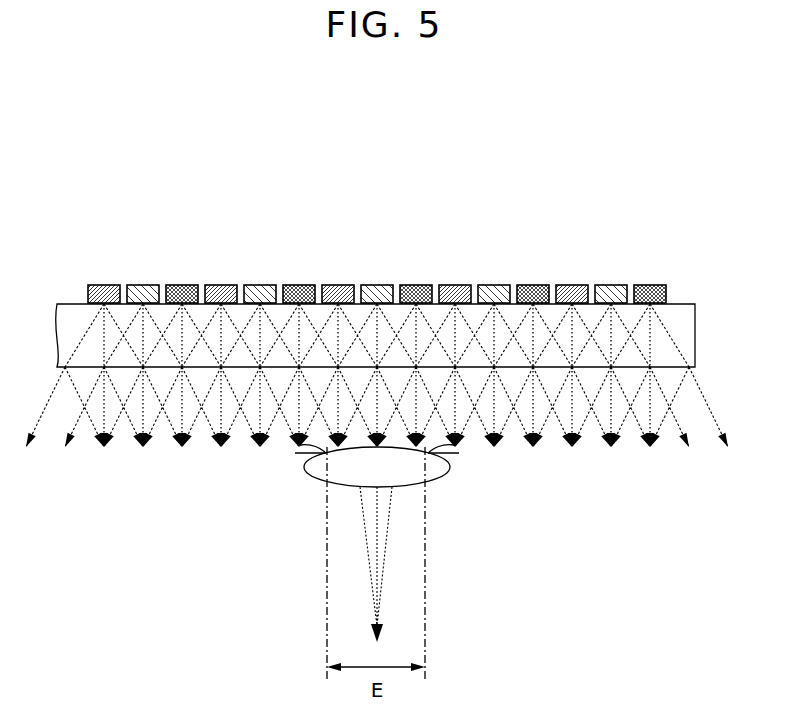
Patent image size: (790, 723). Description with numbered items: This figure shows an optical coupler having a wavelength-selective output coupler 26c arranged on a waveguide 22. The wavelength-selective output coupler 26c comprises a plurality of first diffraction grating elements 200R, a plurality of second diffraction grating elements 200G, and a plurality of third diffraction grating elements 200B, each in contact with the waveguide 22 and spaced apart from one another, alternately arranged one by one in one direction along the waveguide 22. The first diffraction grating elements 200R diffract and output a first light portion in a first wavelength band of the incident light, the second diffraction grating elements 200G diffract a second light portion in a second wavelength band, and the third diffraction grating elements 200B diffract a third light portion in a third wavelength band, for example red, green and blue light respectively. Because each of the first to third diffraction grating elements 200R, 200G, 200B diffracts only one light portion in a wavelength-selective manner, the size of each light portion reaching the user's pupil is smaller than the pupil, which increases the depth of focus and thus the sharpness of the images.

The waveguide 22 is at (684, 335).
The wavelength-selective output coupler 26c is at (87, 212).
The first diffraction grating elements 200R is at (103, 285).
The second diffraction grating elements 200G is at (147, 285).
The third diffraction grating elements 200B is at (187, 285).